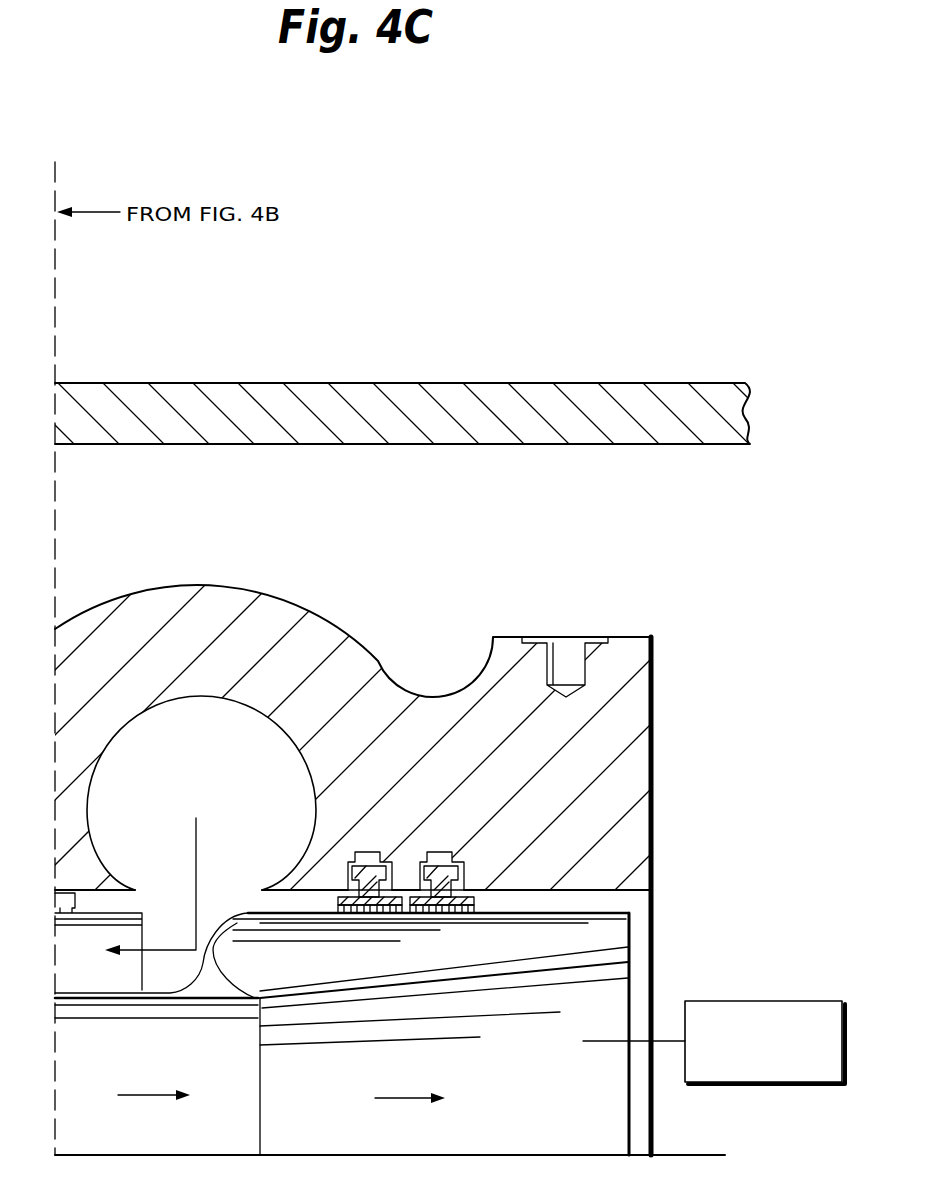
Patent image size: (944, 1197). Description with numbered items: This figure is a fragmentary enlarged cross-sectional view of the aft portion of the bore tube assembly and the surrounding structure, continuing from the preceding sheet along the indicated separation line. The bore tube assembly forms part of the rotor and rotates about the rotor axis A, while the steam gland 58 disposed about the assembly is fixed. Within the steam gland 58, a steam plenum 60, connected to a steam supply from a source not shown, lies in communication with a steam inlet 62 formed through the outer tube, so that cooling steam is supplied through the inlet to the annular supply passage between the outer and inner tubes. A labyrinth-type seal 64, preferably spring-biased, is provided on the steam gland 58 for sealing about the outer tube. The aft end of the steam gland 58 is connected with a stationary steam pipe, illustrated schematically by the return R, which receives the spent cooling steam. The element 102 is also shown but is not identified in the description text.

The steam gland 58 is at (355, 640).
The steam plenum 60 is at (222, 754).
The steam inlet 62 is at (132, 942).
The labyrinth-type seal 64 is at (367, 862).
The manifold block 102 is at (612, 518).
The return R is at (713, 1001).
The rotor axis A is at (388, 1152).